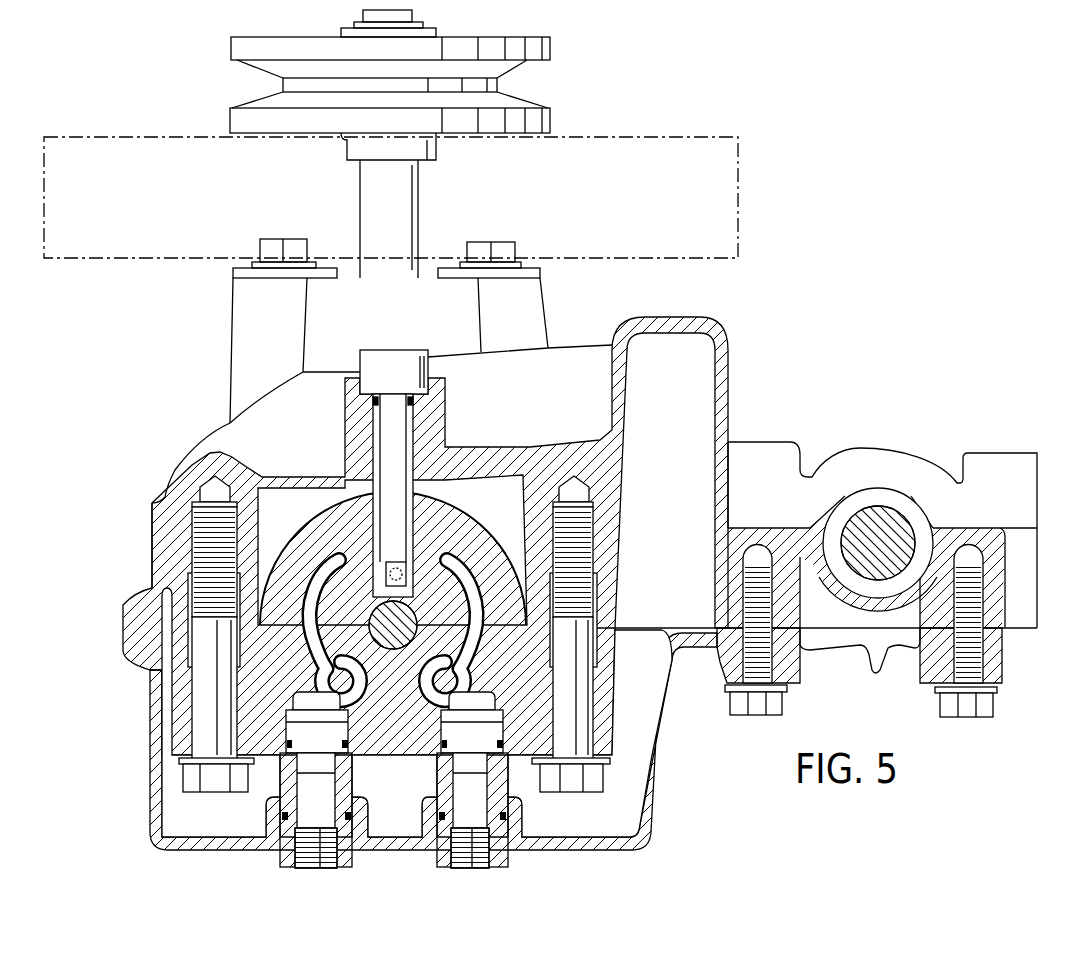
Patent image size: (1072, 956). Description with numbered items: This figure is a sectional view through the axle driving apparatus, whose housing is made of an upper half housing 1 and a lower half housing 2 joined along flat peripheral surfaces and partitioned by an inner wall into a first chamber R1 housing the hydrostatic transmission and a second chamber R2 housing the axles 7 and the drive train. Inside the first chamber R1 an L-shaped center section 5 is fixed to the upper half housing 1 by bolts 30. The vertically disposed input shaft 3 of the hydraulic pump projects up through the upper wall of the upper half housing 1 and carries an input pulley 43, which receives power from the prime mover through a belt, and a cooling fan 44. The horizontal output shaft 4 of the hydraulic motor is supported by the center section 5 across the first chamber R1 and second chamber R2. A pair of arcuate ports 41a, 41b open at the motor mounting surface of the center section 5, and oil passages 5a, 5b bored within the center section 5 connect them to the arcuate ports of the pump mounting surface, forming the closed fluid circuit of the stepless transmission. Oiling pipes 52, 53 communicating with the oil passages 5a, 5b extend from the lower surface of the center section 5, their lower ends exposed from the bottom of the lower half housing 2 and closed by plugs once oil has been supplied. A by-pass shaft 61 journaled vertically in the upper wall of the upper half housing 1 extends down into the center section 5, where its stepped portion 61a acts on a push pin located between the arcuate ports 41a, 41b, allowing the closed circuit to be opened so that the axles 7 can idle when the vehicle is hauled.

The upper half housing 1 is at (150, 515).
The lower half housing 2 is at (162, 810).
The input shaft 3 is at (418, 222).
The output shaft 4 is at (397, 650).
The center section 5 is at (178, 697).
The oil passage 5a is at (312, 676).
The oil passage 5b is at (475, 680).
The axles 7 is at (900, 520).
The bolts 30 is at (187, 777).
The arcuate port 41a is at (318, 580).
The arcuate port 41b is at (470, 590).
The input pulley 43 is at (556, 42).
The cooling fan 44 is at (721, 137).
The oiling pipe 52 is at (272, 780).
The oiling pipe 53 is at (507, 780).
The by-pass shaft 61 is at (438, 428).
The stepped portion 61a is at (408, 578).
The first chamber R1 is at (660, 500).
The second chamber R2 is at (818, 553).